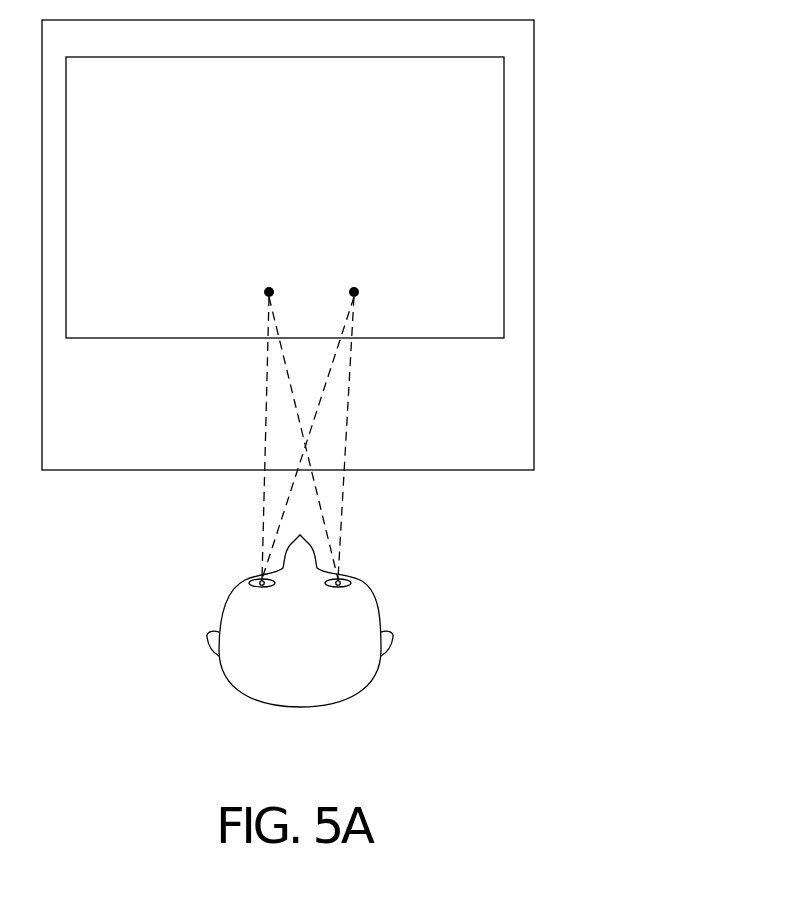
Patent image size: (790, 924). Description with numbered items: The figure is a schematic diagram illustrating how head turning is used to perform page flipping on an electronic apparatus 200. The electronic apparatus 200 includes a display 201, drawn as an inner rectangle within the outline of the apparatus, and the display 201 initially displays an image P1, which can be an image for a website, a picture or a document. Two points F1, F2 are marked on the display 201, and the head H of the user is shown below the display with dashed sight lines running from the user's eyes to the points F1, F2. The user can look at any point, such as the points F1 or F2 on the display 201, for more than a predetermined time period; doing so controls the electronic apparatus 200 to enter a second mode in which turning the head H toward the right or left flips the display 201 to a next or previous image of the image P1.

The electronic apparatus 200 is at (534, 65).
The display 201 is at (504, 125).
The image P1 is at (308, 164).
The point F1 is at (318, 415).
The point F2 is at (296, 415).
The head H is at (375, 603).